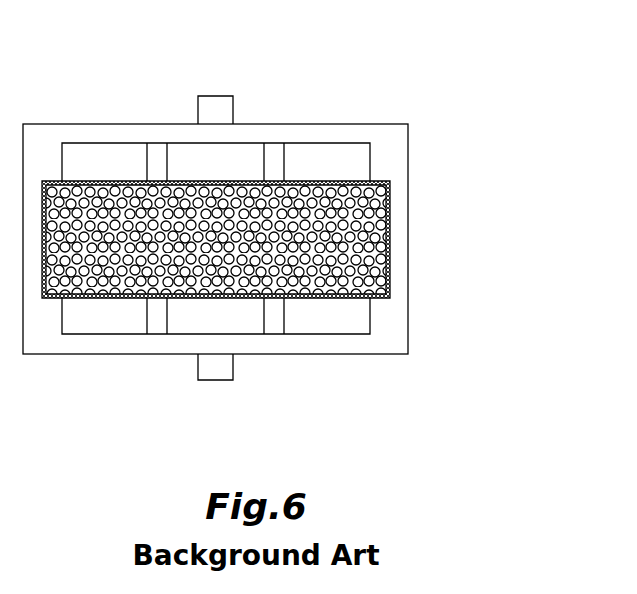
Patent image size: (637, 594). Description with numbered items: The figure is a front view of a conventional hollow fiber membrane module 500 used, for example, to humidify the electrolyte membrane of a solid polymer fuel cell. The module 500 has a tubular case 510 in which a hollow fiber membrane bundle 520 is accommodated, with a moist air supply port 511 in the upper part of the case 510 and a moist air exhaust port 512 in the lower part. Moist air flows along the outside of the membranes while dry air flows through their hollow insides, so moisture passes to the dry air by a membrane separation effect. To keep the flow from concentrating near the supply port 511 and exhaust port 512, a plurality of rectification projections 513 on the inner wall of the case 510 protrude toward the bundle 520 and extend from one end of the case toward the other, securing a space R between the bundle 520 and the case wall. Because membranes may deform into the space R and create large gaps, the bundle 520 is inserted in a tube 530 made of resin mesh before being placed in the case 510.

The hollow fiber membrane module 500 is at (270, 236).
The tubular case 510 is at (419, 160).
The moist air supply port 511 is at (213, 102).
The moist air exhaust port 512 is at (213, 375).
The rectification projection 513 is at (153, 158).
The space (gap) R is at (91, 162).
The hollow fiber membrane bundle 520 is at (370, 242).
The tube 530 is at (352, 300).